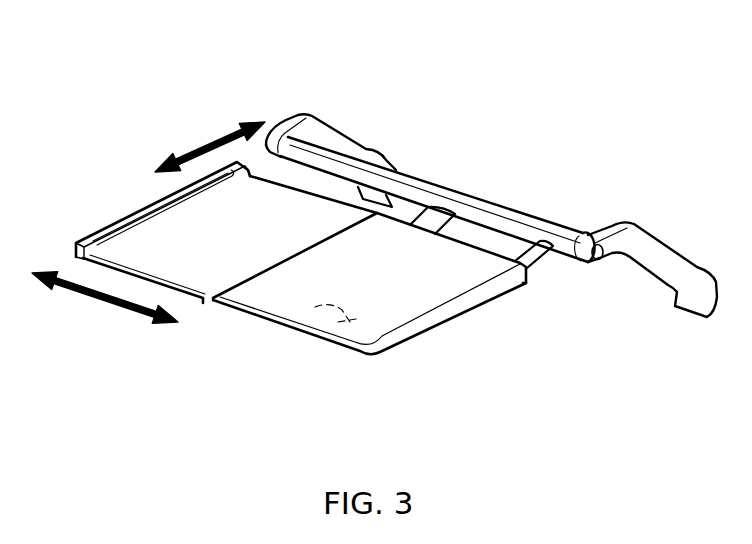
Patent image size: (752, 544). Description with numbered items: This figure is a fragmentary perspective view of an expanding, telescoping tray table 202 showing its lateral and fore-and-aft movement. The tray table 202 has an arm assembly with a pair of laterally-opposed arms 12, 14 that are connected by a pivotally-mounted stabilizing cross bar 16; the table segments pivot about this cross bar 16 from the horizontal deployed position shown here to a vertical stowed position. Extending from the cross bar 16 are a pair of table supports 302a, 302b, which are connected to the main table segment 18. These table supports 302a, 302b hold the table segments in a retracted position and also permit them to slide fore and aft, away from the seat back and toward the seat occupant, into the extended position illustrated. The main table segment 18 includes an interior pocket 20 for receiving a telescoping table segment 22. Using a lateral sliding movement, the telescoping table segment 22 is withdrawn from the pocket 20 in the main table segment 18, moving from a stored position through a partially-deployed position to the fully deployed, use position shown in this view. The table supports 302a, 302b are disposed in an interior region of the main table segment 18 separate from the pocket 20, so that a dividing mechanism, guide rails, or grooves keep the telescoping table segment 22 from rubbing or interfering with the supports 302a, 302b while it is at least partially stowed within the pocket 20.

The tray assembly 202 is at (512, 84).
The arm 12 is at (318, 128).
The arm 14 is at (647, 250).
The pivotally-mounted stabilizing cross bar 16 is at (413, 187).
The main table segment 18 is at (420, 296).
The interior pocket 20 is at (315, 307).
The telescoping table segment 22 is at (157, 250).
The first pin 302a is at (440, 208).
The second pin 302b is at (537, 243).